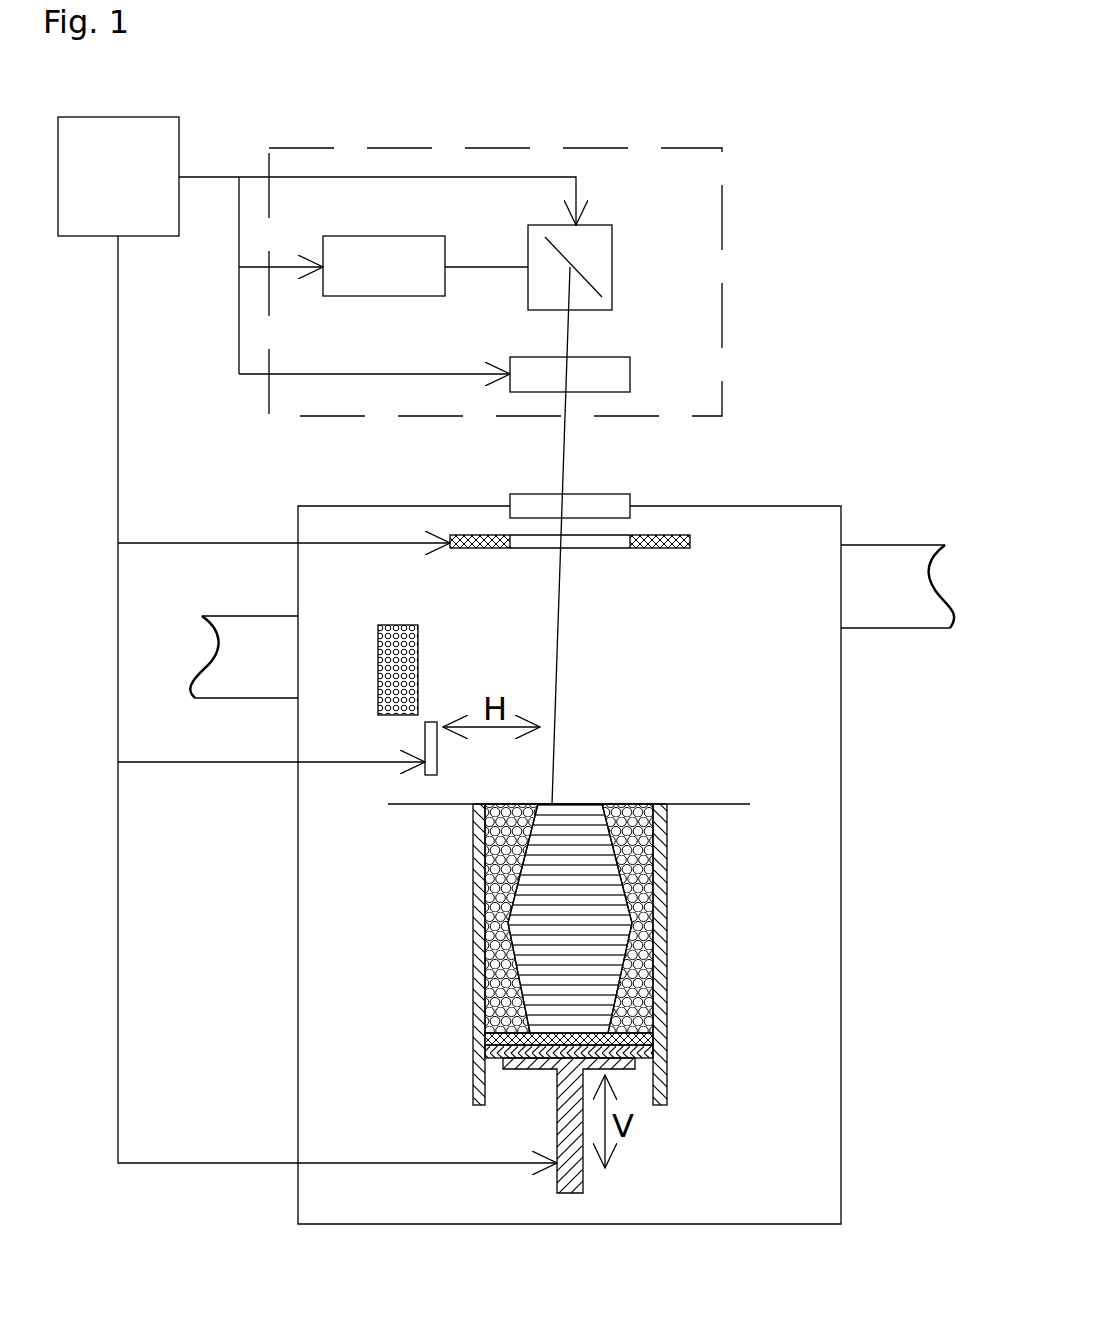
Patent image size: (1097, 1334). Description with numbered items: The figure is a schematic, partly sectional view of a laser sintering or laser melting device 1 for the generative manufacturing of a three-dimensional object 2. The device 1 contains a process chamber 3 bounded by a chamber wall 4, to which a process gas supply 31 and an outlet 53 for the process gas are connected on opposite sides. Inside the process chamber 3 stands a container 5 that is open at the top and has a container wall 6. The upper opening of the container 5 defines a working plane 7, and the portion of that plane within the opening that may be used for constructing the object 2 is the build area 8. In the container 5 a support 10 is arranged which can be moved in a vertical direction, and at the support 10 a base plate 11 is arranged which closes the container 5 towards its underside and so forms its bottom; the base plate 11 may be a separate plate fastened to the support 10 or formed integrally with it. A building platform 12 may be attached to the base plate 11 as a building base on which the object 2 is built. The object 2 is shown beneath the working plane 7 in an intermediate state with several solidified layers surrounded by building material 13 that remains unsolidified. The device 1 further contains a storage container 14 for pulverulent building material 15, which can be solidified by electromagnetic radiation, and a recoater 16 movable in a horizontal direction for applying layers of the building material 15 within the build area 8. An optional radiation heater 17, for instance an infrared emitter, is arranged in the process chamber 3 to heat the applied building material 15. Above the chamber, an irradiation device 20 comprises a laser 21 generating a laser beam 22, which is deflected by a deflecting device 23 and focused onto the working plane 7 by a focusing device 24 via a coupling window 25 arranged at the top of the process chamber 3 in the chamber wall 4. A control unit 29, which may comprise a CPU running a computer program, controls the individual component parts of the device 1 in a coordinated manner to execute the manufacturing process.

The laser sintering or laser melting device 1 is at (824, 138).
The object 2 is at (585, 862).
The process chamber 3 is at (760, 505).
The chamber wall 4 is at (298, 1008).
The container 5 is at (667, 1018).
The container wall 6 is at (660, 955).
The working plane 7 is at (715, 805).
The build area 8 is at (630, 805).
The support 10 is at (545, 1065).
The base plate 11 is at (513, 1052).
The building platform 12 is at (480, 1040).
The building material 13 is at (475, 848).
The storage container 14 is at (396, 625).
The pulverulent building material 15 is at (420, 668).
The recoater 16 is at (428, 740).
The radiation heater 17 is at (475, 535).
The irradiation device 20 is at (722, 267).
The laser 21 is at (385, 297).
The laser beam 22 is at (467, 267).
The deflecting device 23 is at (600, 237).
The focusing device 24 is at (600, 368).
The coupling window 25 is at (605, 506).
The control unit 29 is at (317, 640).
The process gas supply 31 is at (240, 626).
The outlet 53 is at (907, 555).